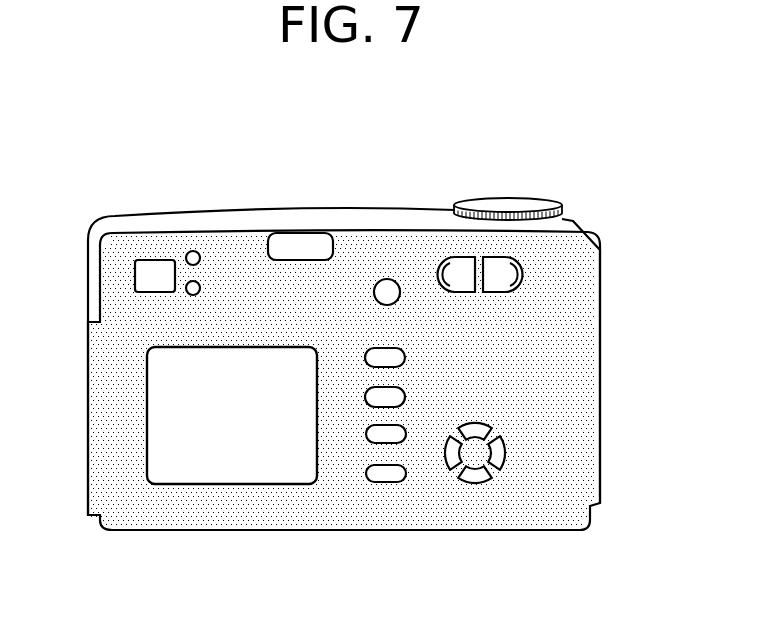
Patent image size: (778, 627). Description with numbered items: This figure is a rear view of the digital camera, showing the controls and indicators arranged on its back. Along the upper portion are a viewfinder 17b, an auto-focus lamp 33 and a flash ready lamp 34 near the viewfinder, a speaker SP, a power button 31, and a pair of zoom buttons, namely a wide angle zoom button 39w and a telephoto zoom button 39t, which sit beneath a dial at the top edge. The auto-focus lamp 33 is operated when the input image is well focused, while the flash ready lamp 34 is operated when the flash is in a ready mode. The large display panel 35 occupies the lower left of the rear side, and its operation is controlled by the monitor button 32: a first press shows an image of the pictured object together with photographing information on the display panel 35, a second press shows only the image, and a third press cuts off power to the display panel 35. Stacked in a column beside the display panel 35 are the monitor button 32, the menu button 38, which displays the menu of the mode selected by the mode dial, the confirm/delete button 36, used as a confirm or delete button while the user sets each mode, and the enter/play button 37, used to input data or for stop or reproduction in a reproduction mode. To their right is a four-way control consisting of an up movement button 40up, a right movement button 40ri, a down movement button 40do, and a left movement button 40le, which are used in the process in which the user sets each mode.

The viewfinder 17b is at (152, 270).
The auto-focus lamp 33 is at (193, 251).
The flash ready lamp 34 is at (184, 292).
The speaker SP is at (300, 240).
The power button 31 is at (388, 283).
The wide angle zoom button 39w is at (453, 272).
The telephoto zoom button 39t is at (502, 270).
The monitor button 32 is at (395, 357).
The menu button 38 is at (395, 396).
The confirm/delete button 36 is at (372, 442).
The enter/play button 37 is at (385, 482).
The display panel 35 is at (232, 467).
The up movement button 40up is at (483, 427).
The right movement button 40ri is at (505, 453).
The down movement button 40do is at (473, 482).
The left movement button 40le is at (448, 467).